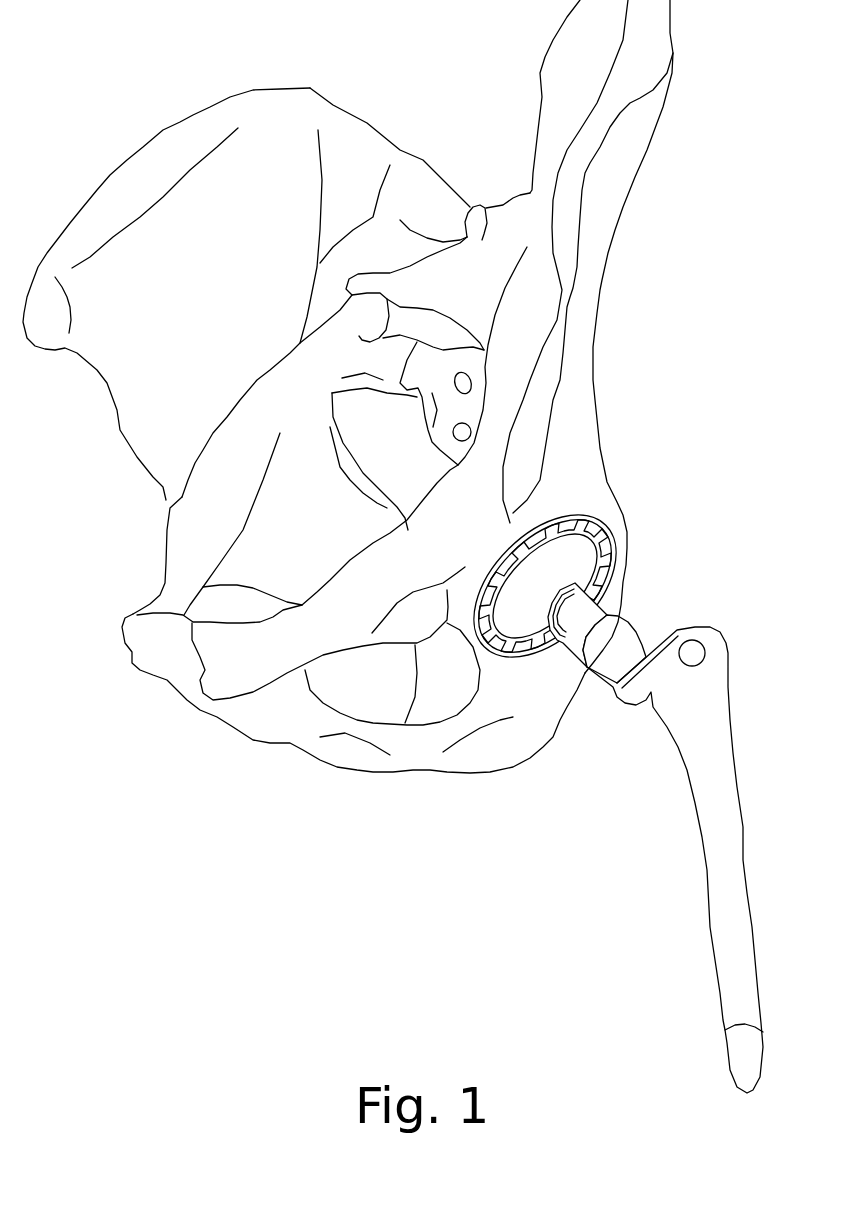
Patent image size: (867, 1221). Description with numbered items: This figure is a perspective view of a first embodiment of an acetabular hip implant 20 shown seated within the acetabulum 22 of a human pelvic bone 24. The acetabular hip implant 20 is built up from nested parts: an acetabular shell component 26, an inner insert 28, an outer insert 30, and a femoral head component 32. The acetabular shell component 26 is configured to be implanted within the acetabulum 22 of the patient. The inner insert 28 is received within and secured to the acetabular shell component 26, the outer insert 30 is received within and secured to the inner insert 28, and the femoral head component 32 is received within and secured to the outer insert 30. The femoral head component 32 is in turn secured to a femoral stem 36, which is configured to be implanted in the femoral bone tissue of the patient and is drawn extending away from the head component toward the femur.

The acetabular hip implant 20 is at (597, 775).
The acetabulum 22 is at (588, 336).
The pelvic bone 24 is at (304, 430).
The acetabular shell component 26 is at (547, 573).
The inner insert 28 is at (545, 555).
The outer insert 30 is at (523, 586).
The femoral head component 32 is at (608, 614).
The femoral stem 36 is at (673, 842).